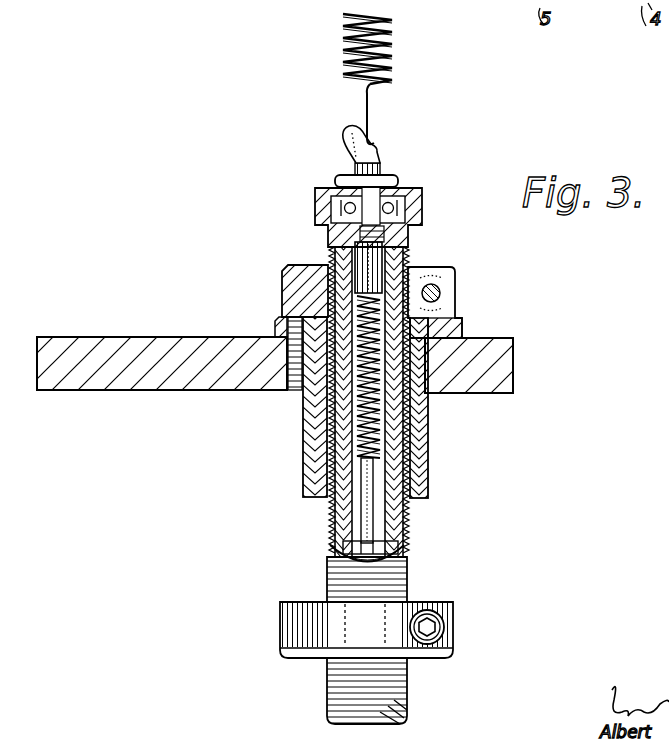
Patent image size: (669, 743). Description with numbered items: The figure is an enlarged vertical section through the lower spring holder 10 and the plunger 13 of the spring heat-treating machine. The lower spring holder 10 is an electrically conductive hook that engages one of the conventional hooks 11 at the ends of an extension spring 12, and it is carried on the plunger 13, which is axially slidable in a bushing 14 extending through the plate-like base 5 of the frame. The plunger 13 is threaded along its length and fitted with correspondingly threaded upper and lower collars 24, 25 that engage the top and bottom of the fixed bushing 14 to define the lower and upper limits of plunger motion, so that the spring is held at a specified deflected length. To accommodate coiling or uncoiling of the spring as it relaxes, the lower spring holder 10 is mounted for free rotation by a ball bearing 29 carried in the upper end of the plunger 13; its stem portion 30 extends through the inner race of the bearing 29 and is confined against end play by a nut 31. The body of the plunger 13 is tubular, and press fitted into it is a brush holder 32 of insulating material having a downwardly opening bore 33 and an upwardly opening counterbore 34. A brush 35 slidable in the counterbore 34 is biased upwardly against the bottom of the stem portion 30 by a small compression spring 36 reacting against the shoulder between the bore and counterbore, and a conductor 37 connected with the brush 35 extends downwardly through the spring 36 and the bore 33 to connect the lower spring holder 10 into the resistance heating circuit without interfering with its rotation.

The base 5 is at (193, 378).
The upper collar 24 is at (288, 283).
The bushing 14 is at (413, 445).
The brush holder 32 is at (393, 503).
The nut 31 is at (406, 221).
The stem portion 30 is at (384, 236).
The brush 35 is at (374, 264).
The counterbore 34 is at (372, 407).
The compression spring 36 is at (376, 450).
The bore 33 is at (400, 546).
The conductor 37 is at (331, 553).
The plunger 13 is at (407, 581).
The lower collar 25 is at (293, 637).
The ball bearing 29 is at (406, 187).
The lower spring holder 10 is at (358, 142).
The hooks 11 is at (367, 131).
The extension spring 12 is at (392, 60).